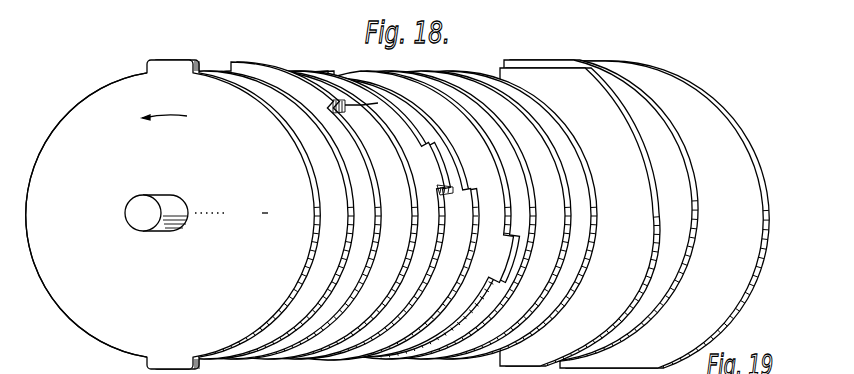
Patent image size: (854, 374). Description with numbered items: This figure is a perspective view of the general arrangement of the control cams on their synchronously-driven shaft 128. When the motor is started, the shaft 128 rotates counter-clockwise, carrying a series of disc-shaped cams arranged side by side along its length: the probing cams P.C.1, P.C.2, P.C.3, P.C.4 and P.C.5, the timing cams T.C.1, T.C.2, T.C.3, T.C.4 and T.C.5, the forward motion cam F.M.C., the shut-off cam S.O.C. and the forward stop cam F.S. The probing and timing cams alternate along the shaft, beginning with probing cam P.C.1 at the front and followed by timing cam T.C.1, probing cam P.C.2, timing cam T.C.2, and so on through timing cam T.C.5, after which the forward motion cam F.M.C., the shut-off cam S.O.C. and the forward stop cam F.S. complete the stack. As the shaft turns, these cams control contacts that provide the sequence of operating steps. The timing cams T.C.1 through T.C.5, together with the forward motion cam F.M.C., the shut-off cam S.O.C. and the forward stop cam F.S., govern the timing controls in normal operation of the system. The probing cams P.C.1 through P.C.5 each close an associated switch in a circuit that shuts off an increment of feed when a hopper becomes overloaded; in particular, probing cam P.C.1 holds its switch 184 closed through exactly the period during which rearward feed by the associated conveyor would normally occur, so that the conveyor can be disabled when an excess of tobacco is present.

The shaft 128 is at (152, 194).
The switch 184 is at (86, 223).
The probing cam P.C.1 is at (173, 214).
The timing cam T.C.1 is at (207, 215).
The probing cam P.C.2 is at (234, 210).
The timing cam T.C.2 is at (271, 215).
The probing cam P.C.3 is at (302, 215).
The timing cam T.C.3 is at (332, 215).
The probing cam P.C.4 is at (377, 214).
The timing cam T.C.4 is at (389, 215).
The probing cam P.C.5 is at (424, 215).
The timing cam T.C.5 is at (450, 215).
The forward motion cam F.M.C. is at (580, 217).
The shut-off cam S.O.C. is at (601, 211).
The forward stop cam F.S. is at (664, 214).